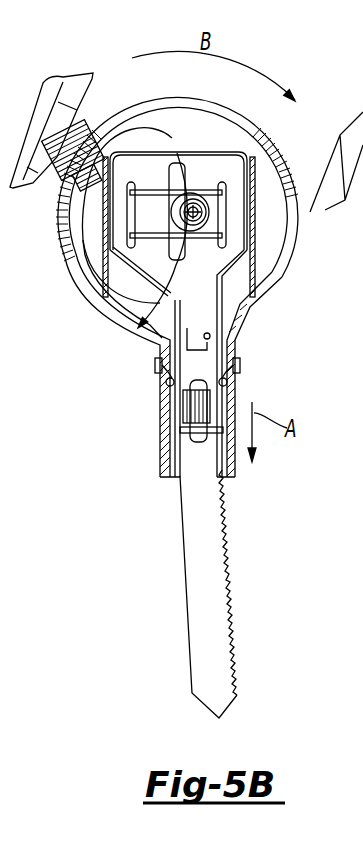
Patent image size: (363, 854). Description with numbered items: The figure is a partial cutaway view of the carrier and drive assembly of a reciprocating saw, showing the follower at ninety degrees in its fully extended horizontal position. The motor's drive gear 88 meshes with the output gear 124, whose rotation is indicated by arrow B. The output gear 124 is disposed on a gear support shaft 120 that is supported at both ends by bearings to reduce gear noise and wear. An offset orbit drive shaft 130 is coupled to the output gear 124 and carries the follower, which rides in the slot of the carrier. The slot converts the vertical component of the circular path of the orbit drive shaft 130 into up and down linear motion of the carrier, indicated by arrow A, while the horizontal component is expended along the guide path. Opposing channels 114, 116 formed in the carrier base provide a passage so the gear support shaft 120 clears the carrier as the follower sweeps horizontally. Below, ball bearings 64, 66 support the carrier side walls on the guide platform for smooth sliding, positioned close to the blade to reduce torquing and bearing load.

The ball bearing 64 is at (166, 382).
The ball bearing 66 is at (228, 382).
The drive gear 88 is at (80, 127).
The channel 114 is at (210, 180).
The channel 116 is at (183, 258).
The gear support shaft 120 is at (165, 214).
The output gear 124 is at (281, 258).
The orbit drive shaft 130 is at (197, 212).